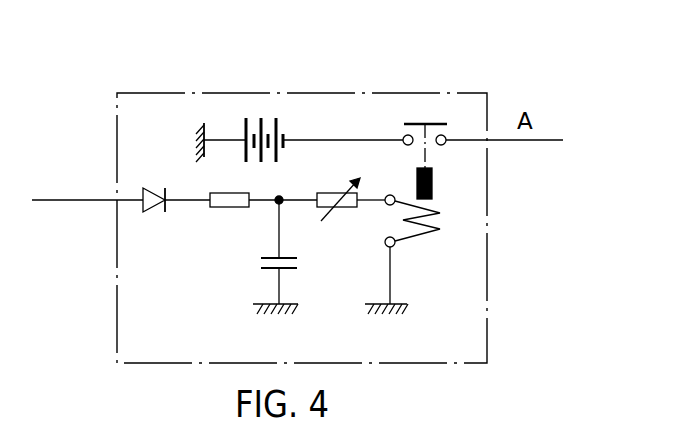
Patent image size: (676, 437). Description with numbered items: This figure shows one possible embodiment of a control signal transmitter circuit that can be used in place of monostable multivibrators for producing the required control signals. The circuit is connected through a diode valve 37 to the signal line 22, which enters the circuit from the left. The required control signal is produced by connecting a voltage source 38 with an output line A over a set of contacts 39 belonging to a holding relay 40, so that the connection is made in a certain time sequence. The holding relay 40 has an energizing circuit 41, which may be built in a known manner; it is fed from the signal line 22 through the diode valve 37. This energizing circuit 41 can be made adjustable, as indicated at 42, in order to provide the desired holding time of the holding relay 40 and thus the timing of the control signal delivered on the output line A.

The signal line 22 is at (60, 198).
The diode valve 37 is at (155, 213).
The voltage source 38 is at (279, 129).
The set of contacts 39 is at (433, 124).
The holding relay 40 is at (453, 268).
The energizing circuit 41 is at (334, 212).
The adjustable element 42 is at (348, 184).